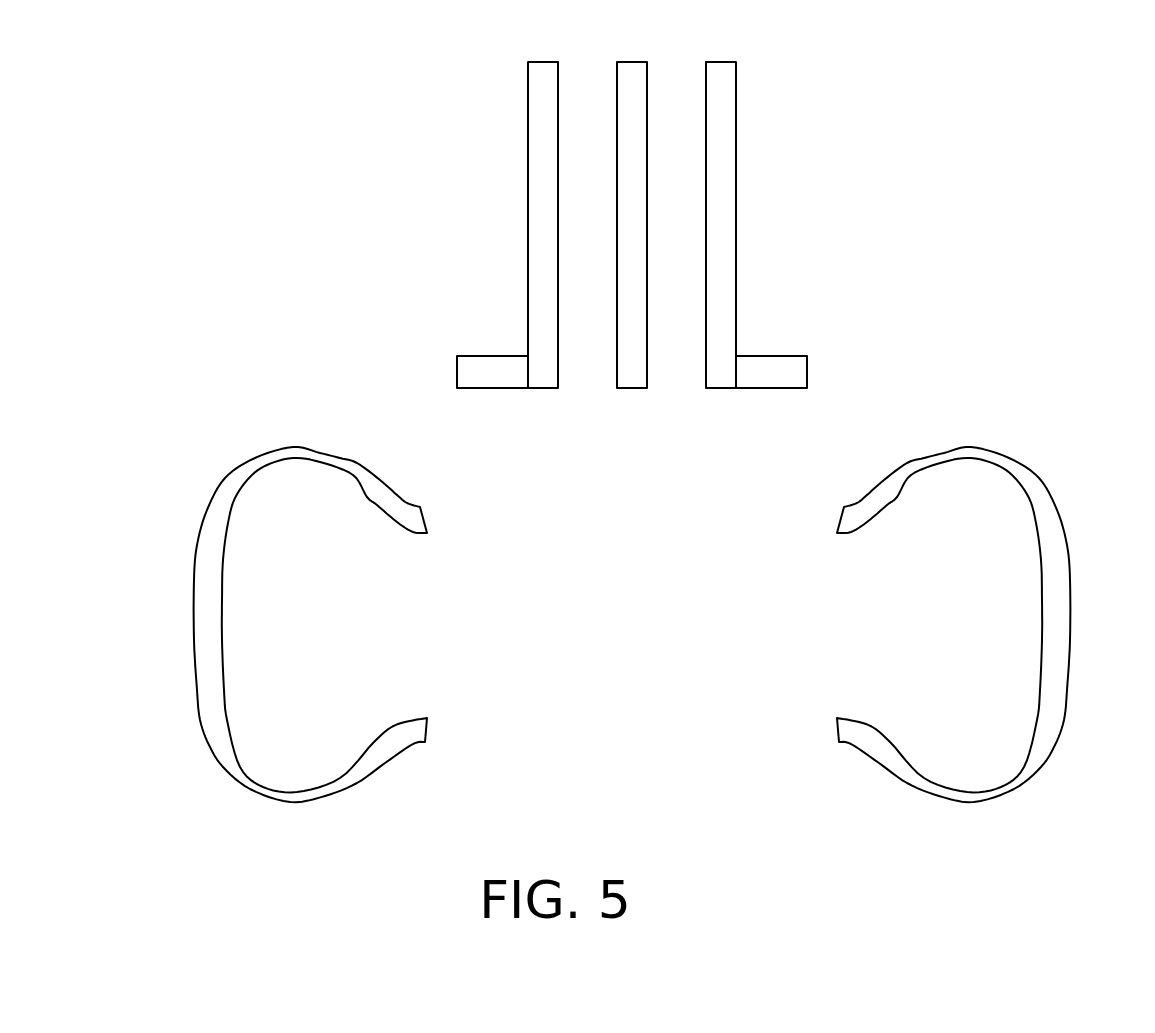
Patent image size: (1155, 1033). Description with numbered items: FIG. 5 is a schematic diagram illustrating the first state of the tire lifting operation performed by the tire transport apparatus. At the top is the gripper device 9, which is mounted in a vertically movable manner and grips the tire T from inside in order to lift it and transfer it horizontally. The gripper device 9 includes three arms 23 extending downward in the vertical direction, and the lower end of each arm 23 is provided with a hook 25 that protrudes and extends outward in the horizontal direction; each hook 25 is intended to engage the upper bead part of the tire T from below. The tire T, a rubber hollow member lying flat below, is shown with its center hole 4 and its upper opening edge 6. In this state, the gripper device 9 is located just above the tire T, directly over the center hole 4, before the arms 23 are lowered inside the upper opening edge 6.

The gripper device 9 is at (772, 72).
The arm 23 is at (542, 221).
The hook 25 is at (487, 370).
The center hole 4 is at (620, 514).
The upper opening edge 6 is at (848, 518).
The tire T is at (1040, 435).